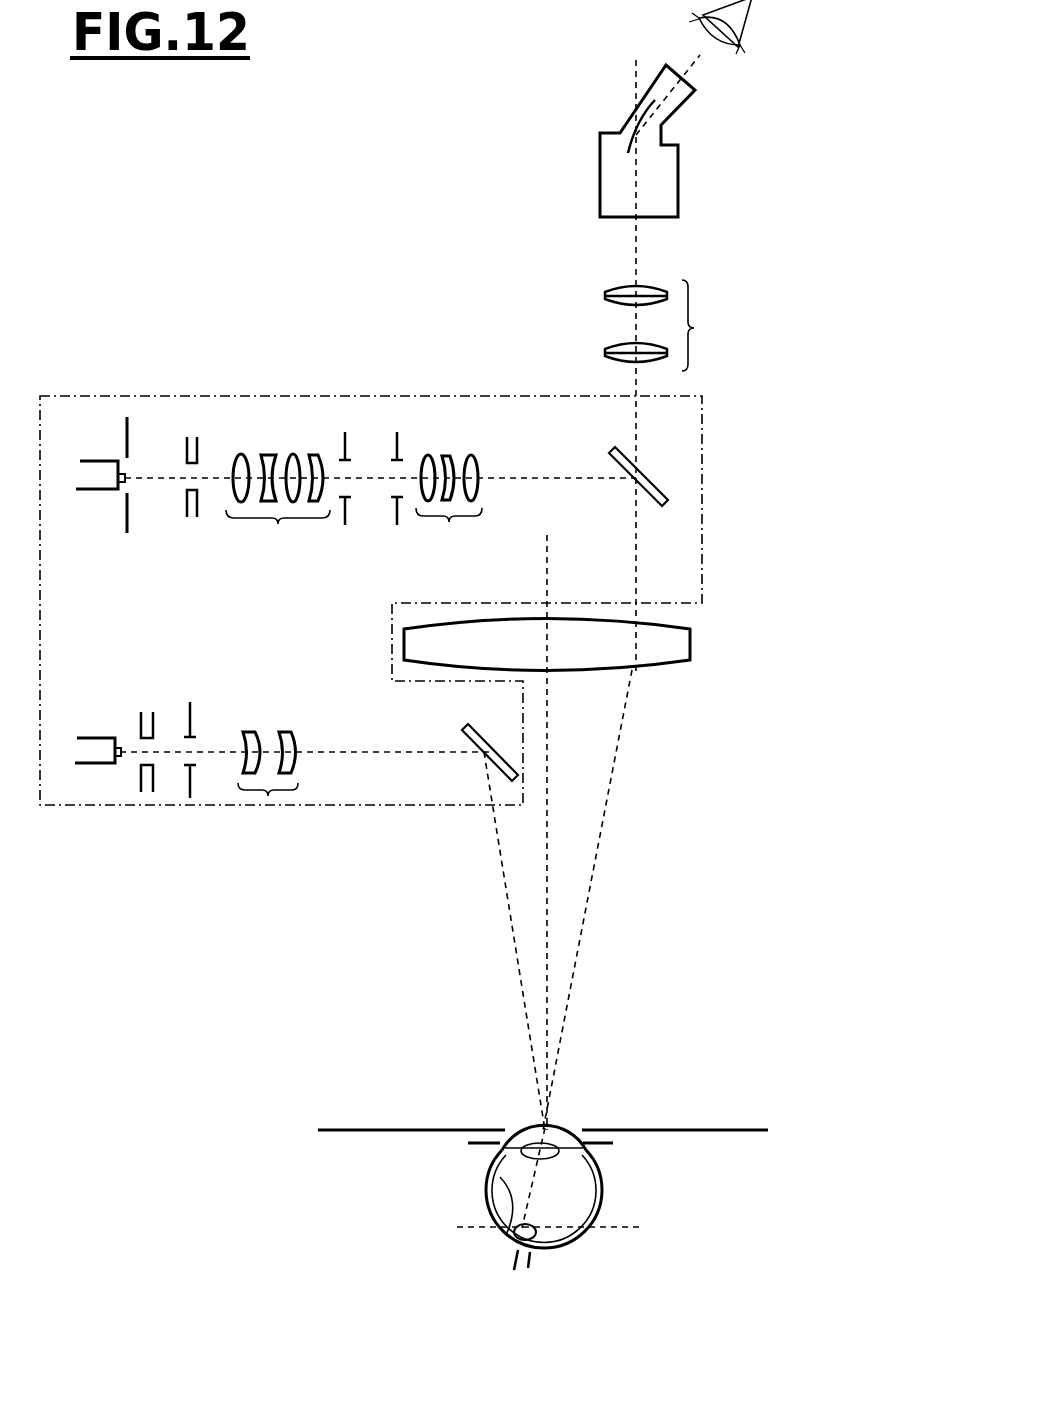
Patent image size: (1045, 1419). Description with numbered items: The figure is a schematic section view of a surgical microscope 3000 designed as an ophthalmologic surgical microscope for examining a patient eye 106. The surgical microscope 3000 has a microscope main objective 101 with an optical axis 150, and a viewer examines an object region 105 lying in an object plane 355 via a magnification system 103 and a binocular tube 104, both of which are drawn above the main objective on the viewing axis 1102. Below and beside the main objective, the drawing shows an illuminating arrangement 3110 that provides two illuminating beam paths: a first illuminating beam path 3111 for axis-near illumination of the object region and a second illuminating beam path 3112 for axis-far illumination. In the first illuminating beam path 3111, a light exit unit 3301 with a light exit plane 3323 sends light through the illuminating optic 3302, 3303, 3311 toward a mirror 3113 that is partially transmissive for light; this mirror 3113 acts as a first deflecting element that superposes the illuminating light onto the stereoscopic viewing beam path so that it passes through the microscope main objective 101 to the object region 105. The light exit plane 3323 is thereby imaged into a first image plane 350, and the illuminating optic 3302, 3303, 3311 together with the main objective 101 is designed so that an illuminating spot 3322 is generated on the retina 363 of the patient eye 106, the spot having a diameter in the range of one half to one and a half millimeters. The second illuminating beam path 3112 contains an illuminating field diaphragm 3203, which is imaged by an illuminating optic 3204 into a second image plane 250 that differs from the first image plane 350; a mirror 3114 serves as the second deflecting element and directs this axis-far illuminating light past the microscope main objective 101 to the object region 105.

The surgical microscope 3000 is at (328, 252).
The illuminating arrangement 3110 is at (207, 396).
The light exit unit 3301 is at (130, 452).
The light exit plane 3323 is at (122, 508).
The illuminating optic 3302 is at (195, 518).
The illuminating optic 3303 is at (278, 524).
The first illuminating beam path 3111 is at (374, 478).
The illuminating optic 3311 is at (449, 522).
The mirror 3113 is at (668, 487).
The optical axis 150 is at (553, 557).
The microscope main objective 101 is at (690, 648).
The binocular tube 104 is at (663, 187).
The observation optical axis 1102 is at (640, 253).
The magnification system 103 is at (694, 328).
The second illuminating beam path 3112 is at (390, 760).
The illuminating field diaphragm 3203 is at (192, 785).
The illuminating optic 3204 is at (268, 796).
The mirror 3114 is at (472, 745).
The object plane 355 is at (680, 1130).
The second image plane 250 is at (602, 1150).
The first image plane 350 is at (452, 1210).
The object region 105 is at (579, 1107).
The retina 363 is at (500, 1177).
The patient eye 106 is at (598, 1228).
The illuminating spot 3322 is at (517, 1250).